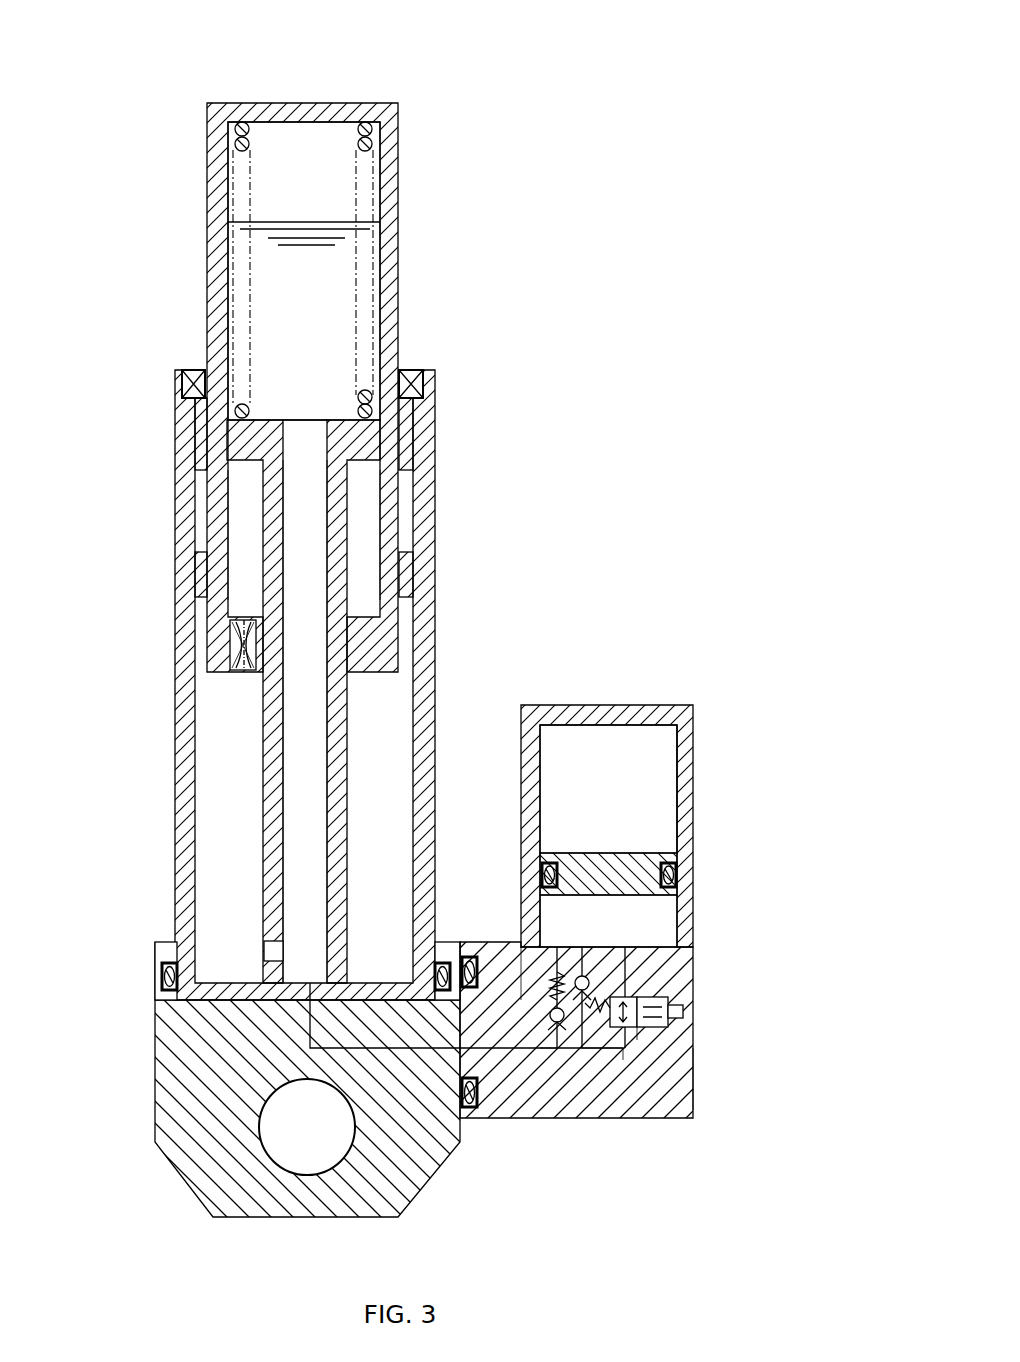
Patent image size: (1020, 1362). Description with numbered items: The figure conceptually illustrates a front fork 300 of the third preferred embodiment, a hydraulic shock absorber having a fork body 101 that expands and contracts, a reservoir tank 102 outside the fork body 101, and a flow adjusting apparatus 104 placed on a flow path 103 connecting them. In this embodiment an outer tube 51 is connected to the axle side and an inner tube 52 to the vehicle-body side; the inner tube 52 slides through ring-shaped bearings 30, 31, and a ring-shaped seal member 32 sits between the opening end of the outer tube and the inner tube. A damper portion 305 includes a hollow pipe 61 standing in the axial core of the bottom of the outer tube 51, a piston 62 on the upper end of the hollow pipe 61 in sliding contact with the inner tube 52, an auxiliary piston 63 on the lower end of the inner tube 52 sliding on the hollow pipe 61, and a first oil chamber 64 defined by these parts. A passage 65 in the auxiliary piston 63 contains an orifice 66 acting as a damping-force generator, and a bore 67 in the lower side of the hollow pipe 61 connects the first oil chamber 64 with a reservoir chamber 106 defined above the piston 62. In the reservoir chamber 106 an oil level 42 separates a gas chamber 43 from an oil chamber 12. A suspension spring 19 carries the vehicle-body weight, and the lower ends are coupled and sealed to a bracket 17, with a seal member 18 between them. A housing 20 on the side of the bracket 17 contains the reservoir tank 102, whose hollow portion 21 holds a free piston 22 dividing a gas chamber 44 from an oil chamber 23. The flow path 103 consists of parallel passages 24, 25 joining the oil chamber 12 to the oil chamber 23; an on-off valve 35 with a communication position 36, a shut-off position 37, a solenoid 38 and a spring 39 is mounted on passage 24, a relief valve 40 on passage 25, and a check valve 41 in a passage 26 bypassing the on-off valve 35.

The front fork 300 is at (431, 616).
The fork body 101 is at (357, 660).
The reservoir tank 102 is at (611, 916).
The flow path 103 is at (478, 1120).
The flow adjusting apparatus 104 is at (662, 971).
The reservoir chamber 106 is at (218, 283).
The oil chamber 12 is at (290, 349).
The gas chamber 43 is at (290, 189).
The oil level 42 is at (262, 222).
The inner tube 52 is at (207, 150).
The suspension spring 19 is at (393, 124).
The seal member 32 is at (420, 381).
The bearing 30 is at (205, 442).
The bearing 31 is at (202, 563).
The damper portion 305 is at (390, 514).
The piston 62 is at (380, 450).
The hollow pipe 61 is at (265, 840).
The first oil chamber 64 is at (235, 590).
The auxiliary piston 63 is at (235, 629).
The orifice 66 is at (235, 665).
The passage 65 is at (240, 673).
The outer tube 51 is at (185, 795).
The bore 67 is at (270, 950).
The seal member 18 is at (155, 979).
The bracket 17 is at (155, 1066).
The housing 20 is at (570, 713).
The hollow portion 21 is at (672, 780).
The free piston 22 is at (672, 855).
The gas chamber 44 is at (590, 804).
The oil chamber 23 is at (590, 936).
The relief valve 40 is at (530, 1000).
The shut-off position 37 is at (650, 984).
The solenoid 38 is at (684, 1010).
The on-off valve 35 is at (673, 1031).
The communication position 36 is at (640, 1031).
The passage 24 is at (697, 1113).
The passage 25 is at (548, 1050).
The check valve 41 is at (558, 1045).
The passage 26 is at (584, 1045).
The spring 39 is at (600, 1046).